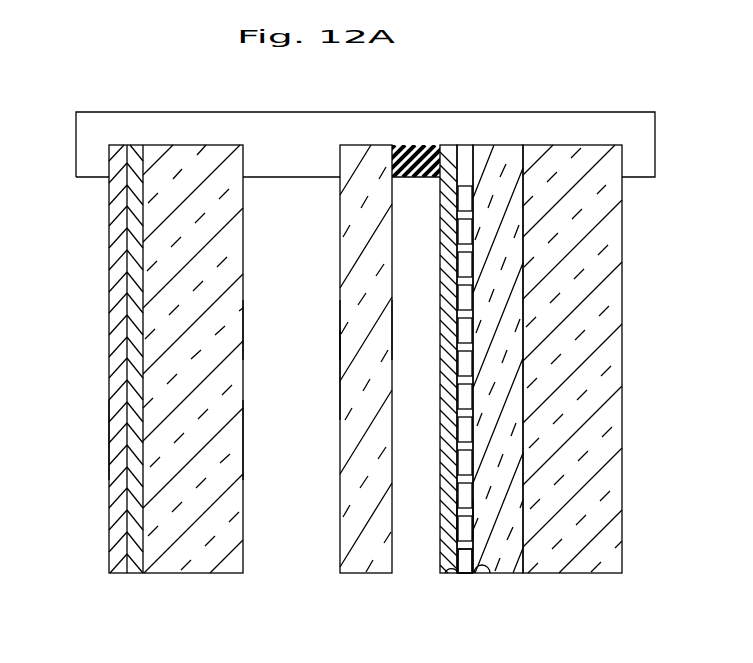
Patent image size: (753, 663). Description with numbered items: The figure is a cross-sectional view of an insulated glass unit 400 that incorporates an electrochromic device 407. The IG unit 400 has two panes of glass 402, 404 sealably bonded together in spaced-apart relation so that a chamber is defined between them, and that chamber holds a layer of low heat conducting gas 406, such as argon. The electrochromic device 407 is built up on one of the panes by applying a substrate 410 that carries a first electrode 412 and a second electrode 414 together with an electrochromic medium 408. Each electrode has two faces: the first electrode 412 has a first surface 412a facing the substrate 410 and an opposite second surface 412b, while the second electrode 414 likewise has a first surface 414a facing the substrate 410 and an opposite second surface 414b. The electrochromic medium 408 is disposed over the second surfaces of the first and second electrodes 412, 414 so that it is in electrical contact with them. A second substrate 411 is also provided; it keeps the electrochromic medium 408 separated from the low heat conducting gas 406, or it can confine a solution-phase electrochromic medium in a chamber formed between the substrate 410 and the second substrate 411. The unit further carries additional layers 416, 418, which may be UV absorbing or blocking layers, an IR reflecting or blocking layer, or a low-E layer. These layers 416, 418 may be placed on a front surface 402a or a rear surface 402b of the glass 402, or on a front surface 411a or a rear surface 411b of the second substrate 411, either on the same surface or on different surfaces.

The IG unit 400 is at (131, 88).
The pane of glass 402 is at (205, 563).
The front surface 402a is at (145, 443).
The rear surface 402b is at (244, 458).
The pane of glass 404 is at (610, 238).
The layer of low heat conducting gas 406 is at (287, 554).
The electrochromic device 407 is at (331, 566).
The electrochromic medium 408 is at (445, 402).
The substrate 410 is at (495, 150).
The second substrate 411 is at (362, 153).
The front surface 411a is at (342, 375).
The rear surface 411b is at (392, 323).
The first electrode 412 is at (465, 532).
The first surface 412a is at (475, 526).
The second surface 412b is at (457, 523).
The second electrode 414 is at (462, 572).
The first surface 414a is at (473, 563).
The second surface 414b is at (452, 568).
The additional layer 416 is at (137, 568).
The additional layer 418 is at (116, 556).